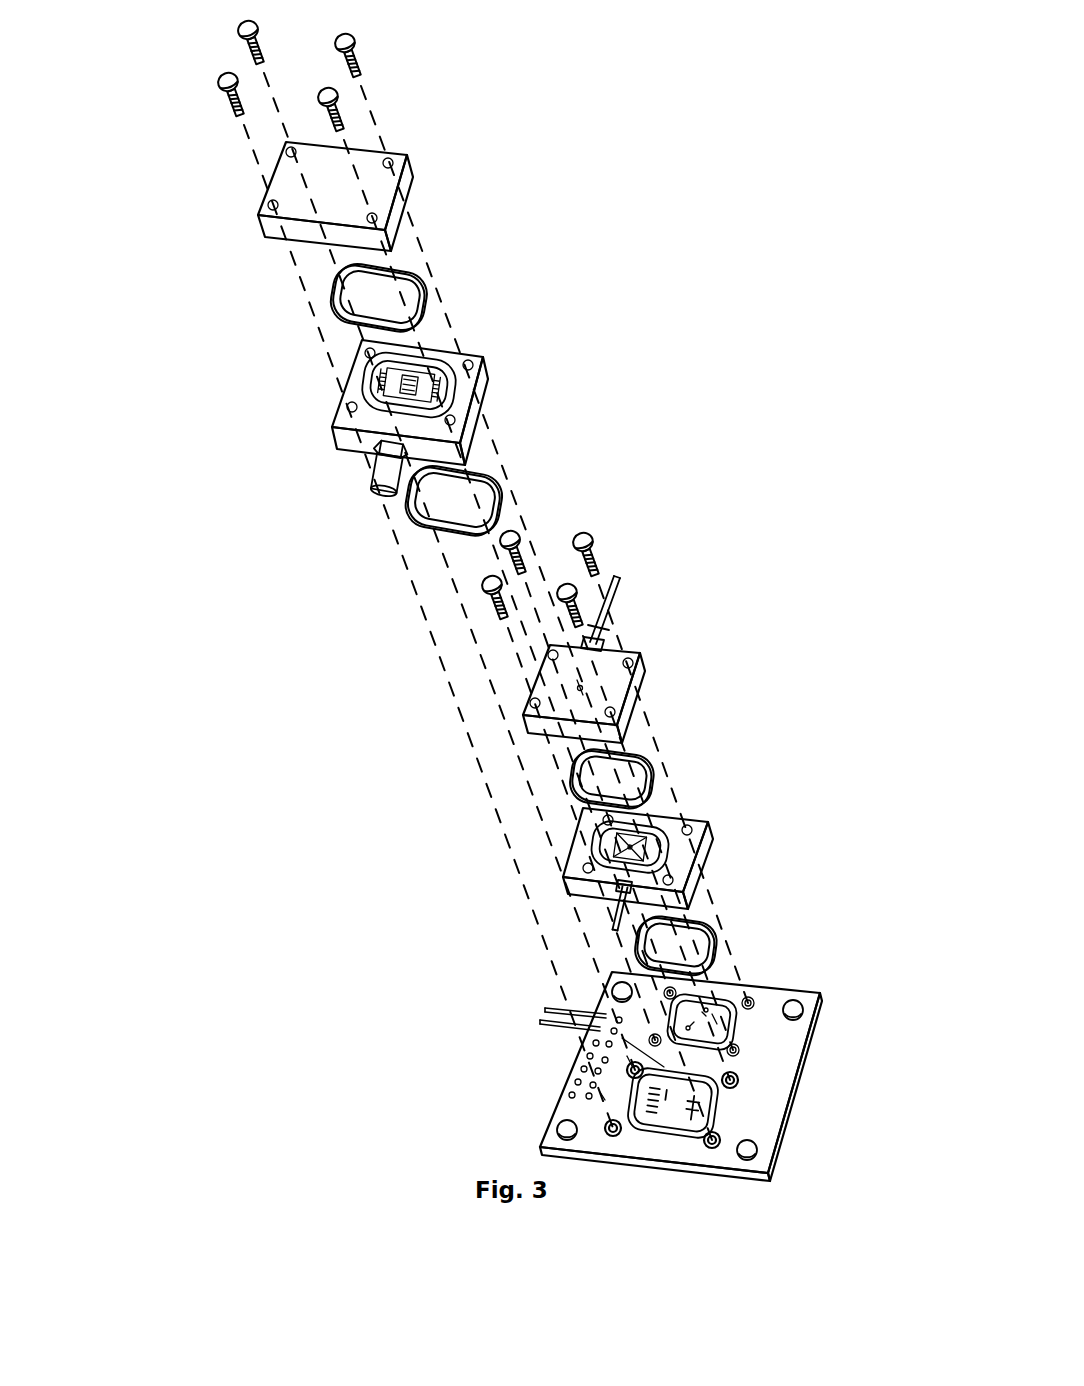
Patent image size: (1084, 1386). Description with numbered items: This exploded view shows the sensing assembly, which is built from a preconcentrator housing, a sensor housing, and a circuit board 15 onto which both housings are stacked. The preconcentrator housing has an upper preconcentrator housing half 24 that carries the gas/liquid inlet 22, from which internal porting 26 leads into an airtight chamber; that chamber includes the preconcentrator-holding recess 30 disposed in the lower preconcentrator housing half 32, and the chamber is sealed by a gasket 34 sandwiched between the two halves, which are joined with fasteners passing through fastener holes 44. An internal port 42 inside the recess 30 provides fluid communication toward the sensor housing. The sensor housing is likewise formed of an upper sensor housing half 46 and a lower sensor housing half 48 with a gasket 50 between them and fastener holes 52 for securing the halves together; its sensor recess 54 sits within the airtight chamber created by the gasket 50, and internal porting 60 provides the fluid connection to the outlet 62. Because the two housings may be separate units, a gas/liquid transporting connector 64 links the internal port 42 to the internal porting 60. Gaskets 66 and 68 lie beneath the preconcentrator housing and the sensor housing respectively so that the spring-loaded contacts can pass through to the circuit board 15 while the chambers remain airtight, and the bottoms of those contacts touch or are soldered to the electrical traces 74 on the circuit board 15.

The circuit board 15 is at (780, 1048).
The gas/liquid inlet 22 is at (618, 577).
The upper preconcentrator housing half 24 is at (620, 683).
The internal porting 26 is at (578, 687).
The preconcentrator-holding recess 30 is at (627, 850).
The lower preconcentrator housing half 32 is at (690, 845).
The gasket 34 is at (648, 758).
The internal port 42 is at (700, 862).
The fastener holes 44 is at (632, 653).
The upper sensor housing half 46 is at (382, 188).
The lower sensor housing half 48 is at (343, 417).
The gasket 50 is at (337, 287).
The fastener holes 52 is at (273, 205).
The sensor recess 54 is at (360, 368).
The internal porting 60 is at (423, 367).
The outlet 62 is at (382, 475).
The gas/liquid transporting connector 64 is at (607, 918).
The gasket 66 is at (713, 950).
The gasket 68 is at (415, 523).
The electrical traces 74 is at (700, 1103).